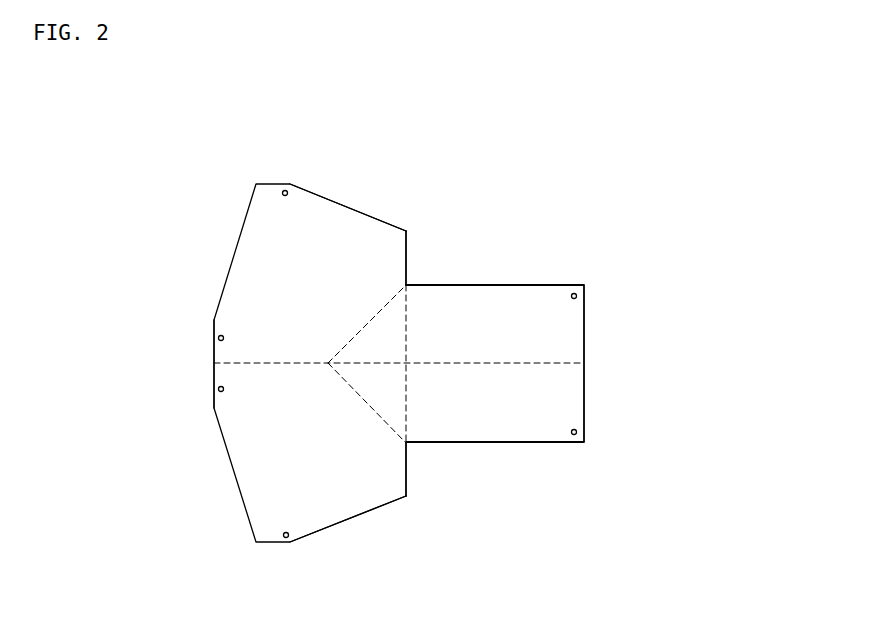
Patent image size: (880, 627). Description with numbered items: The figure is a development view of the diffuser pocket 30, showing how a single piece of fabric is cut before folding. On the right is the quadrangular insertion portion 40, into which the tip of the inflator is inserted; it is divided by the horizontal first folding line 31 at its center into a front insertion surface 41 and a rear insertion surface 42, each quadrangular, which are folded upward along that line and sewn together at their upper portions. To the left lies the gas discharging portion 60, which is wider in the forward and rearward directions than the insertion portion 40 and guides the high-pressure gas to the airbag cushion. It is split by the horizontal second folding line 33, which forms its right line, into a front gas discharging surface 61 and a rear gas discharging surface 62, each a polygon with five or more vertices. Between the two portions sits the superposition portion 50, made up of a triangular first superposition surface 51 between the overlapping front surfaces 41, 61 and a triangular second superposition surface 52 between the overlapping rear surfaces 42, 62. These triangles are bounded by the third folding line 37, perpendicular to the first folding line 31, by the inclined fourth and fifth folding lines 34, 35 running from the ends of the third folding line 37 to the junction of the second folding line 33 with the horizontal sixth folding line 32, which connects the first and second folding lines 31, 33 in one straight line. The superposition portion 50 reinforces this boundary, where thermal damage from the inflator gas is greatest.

The diffuser pocket 30 is at (563, 180).
The first folding line 31 is at (485, 363).
The sixth folding line 32 is at (375, 363).
The second folding line 33 is at (298, 365).
The fourth folding line 34 is at (350, 387).
The fifth folding line 35 is at (360, 330).
The third folding line 37 is at (407, 335).
The insertion portion 40 is at (695, 317).
The front insertion surface 41 is at (560, 393).
The rear insertion surface 42 is at (557, 330).
The superposition portion 50 is at (515, 497).
The first superposition surface 51 is at (390, 393).
The second superposition surface 52 is at (387, 345).
The gas discharging portion 60 is at (112, 270).
The front gas discharging surface 61 is at (263, 408).
The rear gas discharging surface 62 is at (253, 317).